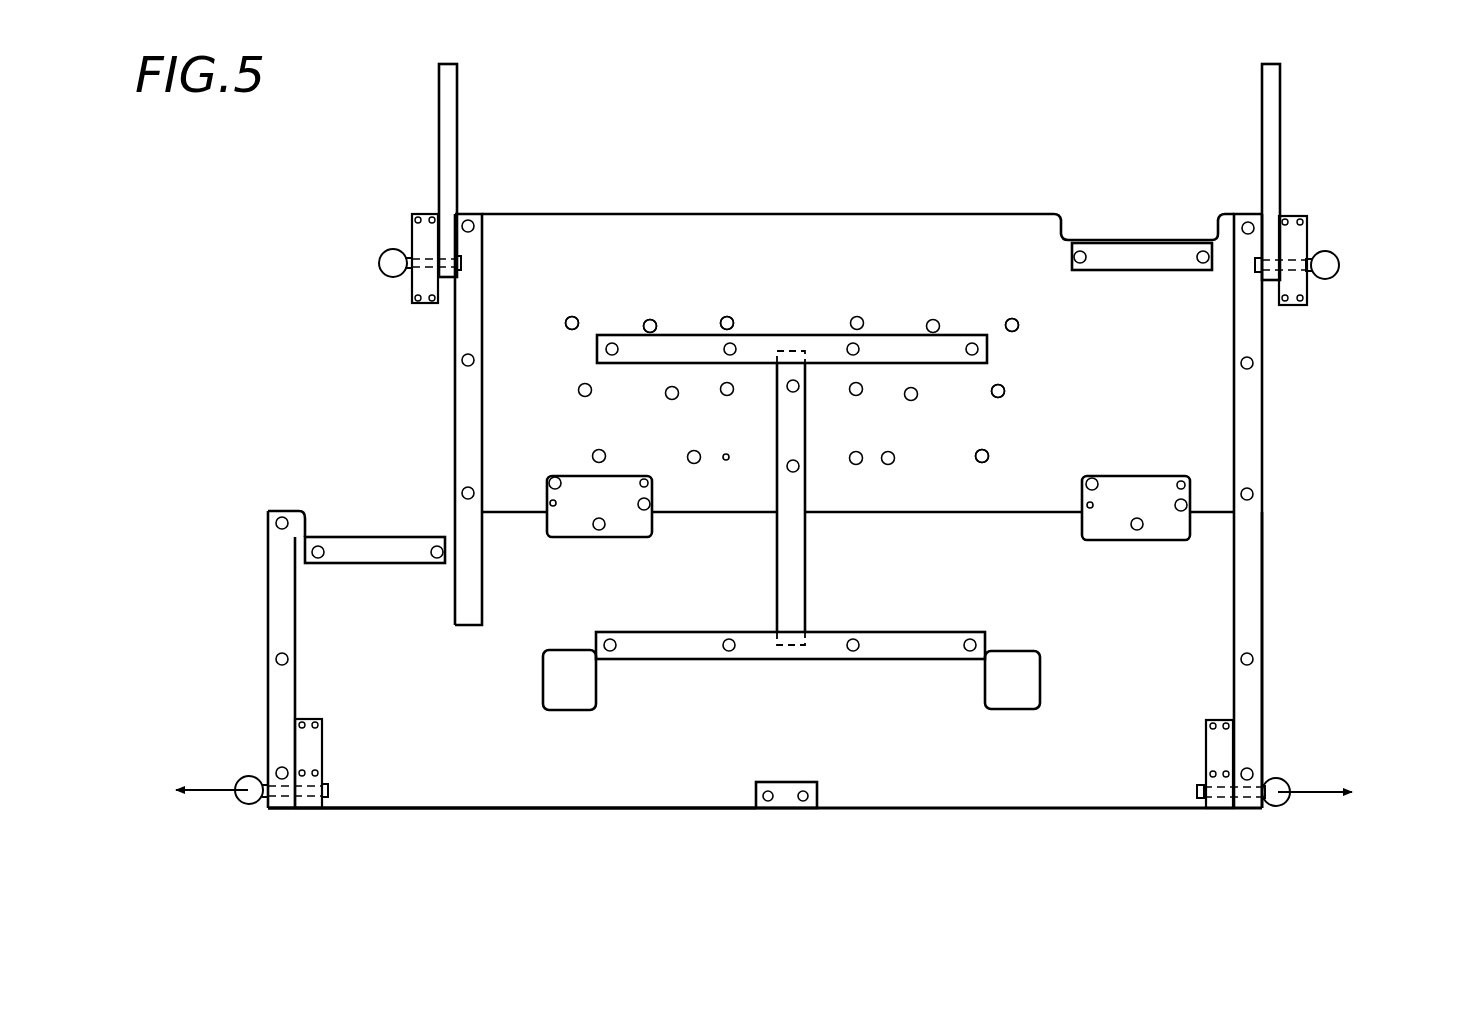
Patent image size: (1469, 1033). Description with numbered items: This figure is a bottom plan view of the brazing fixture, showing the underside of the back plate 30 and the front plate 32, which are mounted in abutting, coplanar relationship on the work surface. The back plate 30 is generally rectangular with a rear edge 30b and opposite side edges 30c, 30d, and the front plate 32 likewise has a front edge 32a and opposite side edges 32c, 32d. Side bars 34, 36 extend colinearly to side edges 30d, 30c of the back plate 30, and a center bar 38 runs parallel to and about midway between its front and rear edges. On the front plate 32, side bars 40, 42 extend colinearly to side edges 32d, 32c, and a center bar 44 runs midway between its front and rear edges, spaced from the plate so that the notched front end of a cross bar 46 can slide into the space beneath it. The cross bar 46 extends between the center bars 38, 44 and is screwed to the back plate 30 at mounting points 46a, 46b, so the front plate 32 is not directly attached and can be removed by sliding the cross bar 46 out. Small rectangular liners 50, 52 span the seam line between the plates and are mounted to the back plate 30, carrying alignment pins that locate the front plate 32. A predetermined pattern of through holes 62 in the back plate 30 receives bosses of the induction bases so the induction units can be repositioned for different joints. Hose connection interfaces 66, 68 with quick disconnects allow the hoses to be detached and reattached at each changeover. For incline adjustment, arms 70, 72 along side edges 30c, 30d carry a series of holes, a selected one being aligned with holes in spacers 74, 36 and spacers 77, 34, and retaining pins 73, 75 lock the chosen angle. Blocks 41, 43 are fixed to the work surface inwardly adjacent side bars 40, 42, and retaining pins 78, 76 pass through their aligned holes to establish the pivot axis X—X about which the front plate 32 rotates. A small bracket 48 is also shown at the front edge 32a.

The back plate 30 is at (945, 245).
The rear edge of back plate 30b is at (795, 214).
The side edge of back plate 30c is at (455, 333).
The side edge of back plate 30d is at (1262, 332).
The front plate 32 is at (560, 785).
The front edge of front plate 32a is at (918, 812).
The side edge of front plate 32c is at (268, 590).
The side edge of front plate 32d is at (1262, 538).
The side bar 34 is at (1250, 393).
The side bar 36 is at (468, 392).
The center bar 38 is at (895, 345).
The side bar 40 is at (1243, 572).
The block 41 is at (1218, 740).
The side bar 42 is at (283, 632).
The block 43 is at (313, 745).
The center bar 44 is at (905, 650).
The cross bar 46 is at (797, 540).
The mounting point 46a is at (792, 392).
The mounting point 46b is at (787, 467).
The bottom bracket 48 is at (790, 800).
The liner 50 is at (1160, 528).
The liner 52 is at (625, 527).
The through holes 62 is at (722, 316).
The hose connection interface 66 is at (373, 548).
The hose connection interface 68 is at (1150, 255).
The adjustable arm 70 is at (447, 125).
The adjustable arm 72 is at (1270, 115).
The retaining pin 73 is at (384, 256).
The spacer 74 is at (430, 214).
The retaining pin 75 is at (1340, 265).
The retaining pin 76 is at (253, 800).
The spacer 77 is at (1305, 290).
The retaining pin 78 is at (1285, 802).